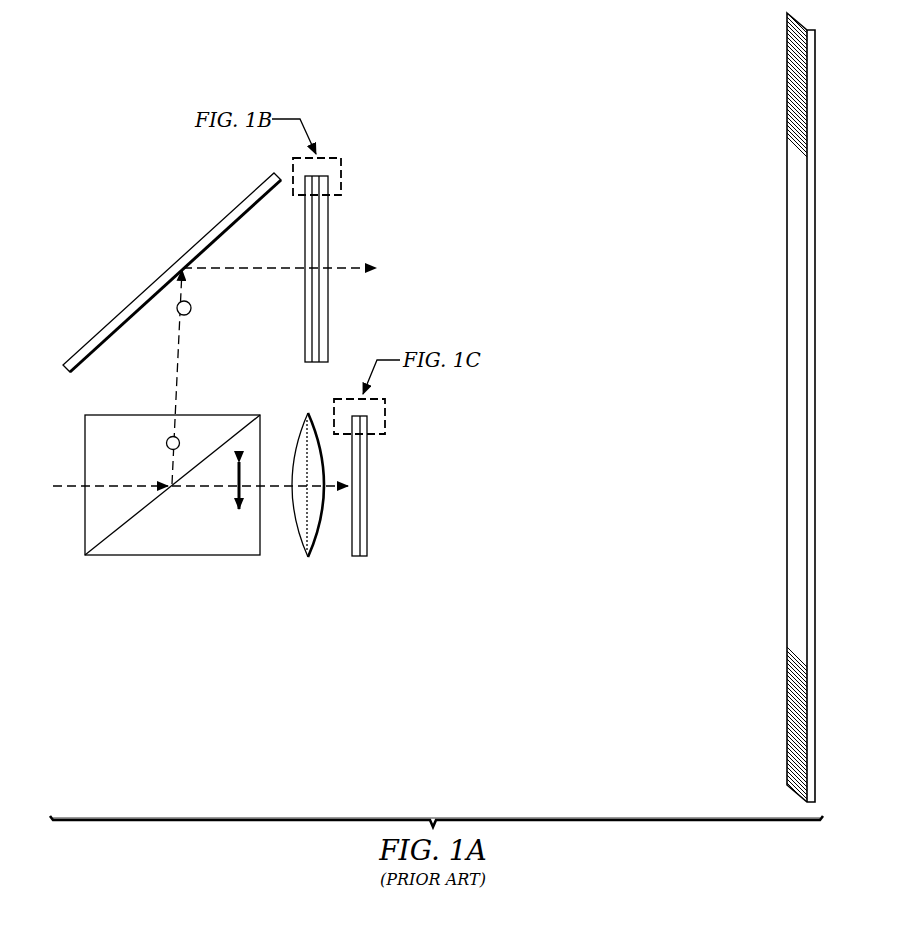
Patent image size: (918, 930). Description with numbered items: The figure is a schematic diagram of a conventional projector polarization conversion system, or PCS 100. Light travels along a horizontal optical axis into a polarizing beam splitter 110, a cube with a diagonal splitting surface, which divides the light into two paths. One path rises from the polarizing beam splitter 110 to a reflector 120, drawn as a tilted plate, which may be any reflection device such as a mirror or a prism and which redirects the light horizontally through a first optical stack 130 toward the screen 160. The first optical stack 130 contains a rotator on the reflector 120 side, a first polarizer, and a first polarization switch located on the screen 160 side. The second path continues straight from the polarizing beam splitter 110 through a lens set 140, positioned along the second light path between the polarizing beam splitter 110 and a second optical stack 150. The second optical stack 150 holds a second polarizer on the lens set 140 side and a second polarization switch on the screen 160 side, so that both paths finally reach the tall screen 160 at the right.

The polarization conversion system 100 is at (356, 67).
The polarizing beam splitter 110 is at (162, 556).
The reflector 120 is at (209, 230).
The first optical stack 130 is at (331, 236).
The lens set 140 is at (296, 534).
The second optical stack 150 is at (372, 506).
The screen 160 is at (797, 497).